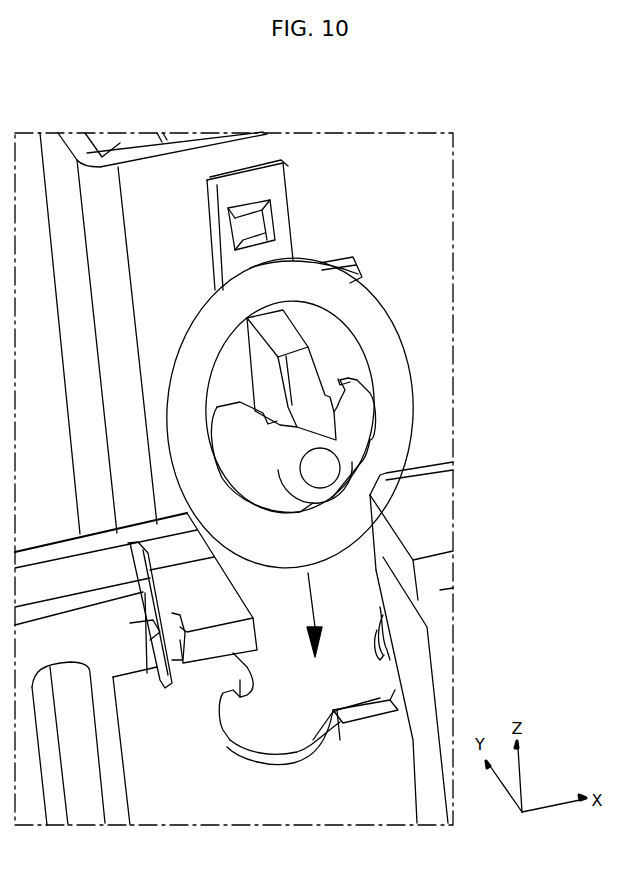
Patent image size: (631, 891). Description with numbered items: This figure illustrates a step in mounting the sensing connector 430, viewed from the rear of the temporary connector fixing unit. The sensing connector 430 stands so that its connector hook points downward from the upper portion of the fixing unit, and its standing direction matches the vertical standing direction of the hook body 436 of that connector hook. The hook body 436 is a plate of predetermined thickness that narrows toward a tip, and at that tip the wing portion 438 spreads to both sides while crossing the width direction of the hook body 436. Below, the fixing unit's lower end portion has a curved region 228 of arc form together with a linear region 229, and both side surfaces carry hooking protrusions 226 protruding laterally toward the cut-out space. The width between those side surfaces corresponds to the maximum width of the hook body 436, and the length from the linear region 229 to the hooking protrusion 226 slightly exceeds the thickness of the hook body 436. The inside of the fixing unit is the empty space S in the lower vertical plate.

The sensing connector 430 is at (310, 124).
The hook body 436 is at (300, 373).
The wing portion 438 is at (355, 427).
The hooking protrusion 226 is at (240, 680).
The curved region 228 is at (290, 763).
The linear region 229 is at (373, 698).
The empty space S is at (357, 780).